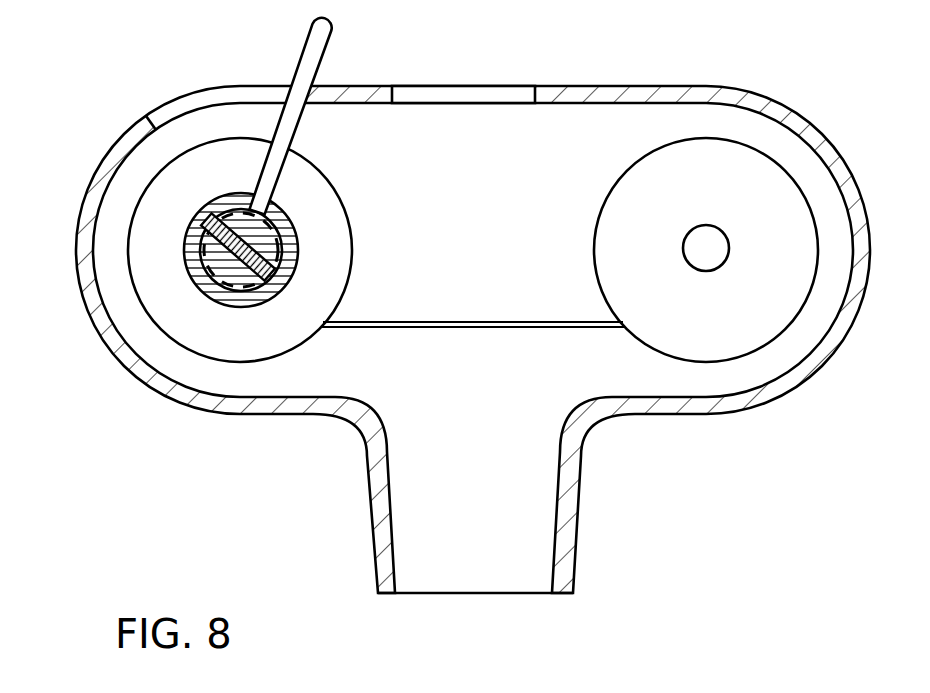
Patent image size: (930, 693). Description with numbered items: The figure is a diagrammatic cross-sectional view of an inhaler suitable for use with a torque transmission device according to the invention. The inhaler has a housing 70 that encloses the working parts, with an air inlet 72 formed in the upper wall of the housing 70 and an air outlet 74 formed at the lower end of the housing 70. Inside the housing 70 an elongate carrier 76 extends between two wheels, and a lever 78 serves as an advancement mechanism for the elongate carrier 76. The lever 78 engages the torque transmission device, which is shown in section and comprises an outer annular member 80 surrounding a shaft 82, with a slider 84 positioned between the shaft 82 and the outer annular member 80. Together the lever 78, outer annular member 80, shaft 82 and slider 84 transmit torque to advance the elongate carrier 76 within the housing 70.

The housing 70 is at (832, 148).
The air inlet 72 is at (446, 95).
The air outlet 74 is at (447, 593).
The elongate carrier 76 is at (547, 327).
The lever 78 is at (302, 60).
The outer annular member 80 is at (199, 279).
The shaft 82 is at (204, 262).
The slider 84 is at (250, 274).